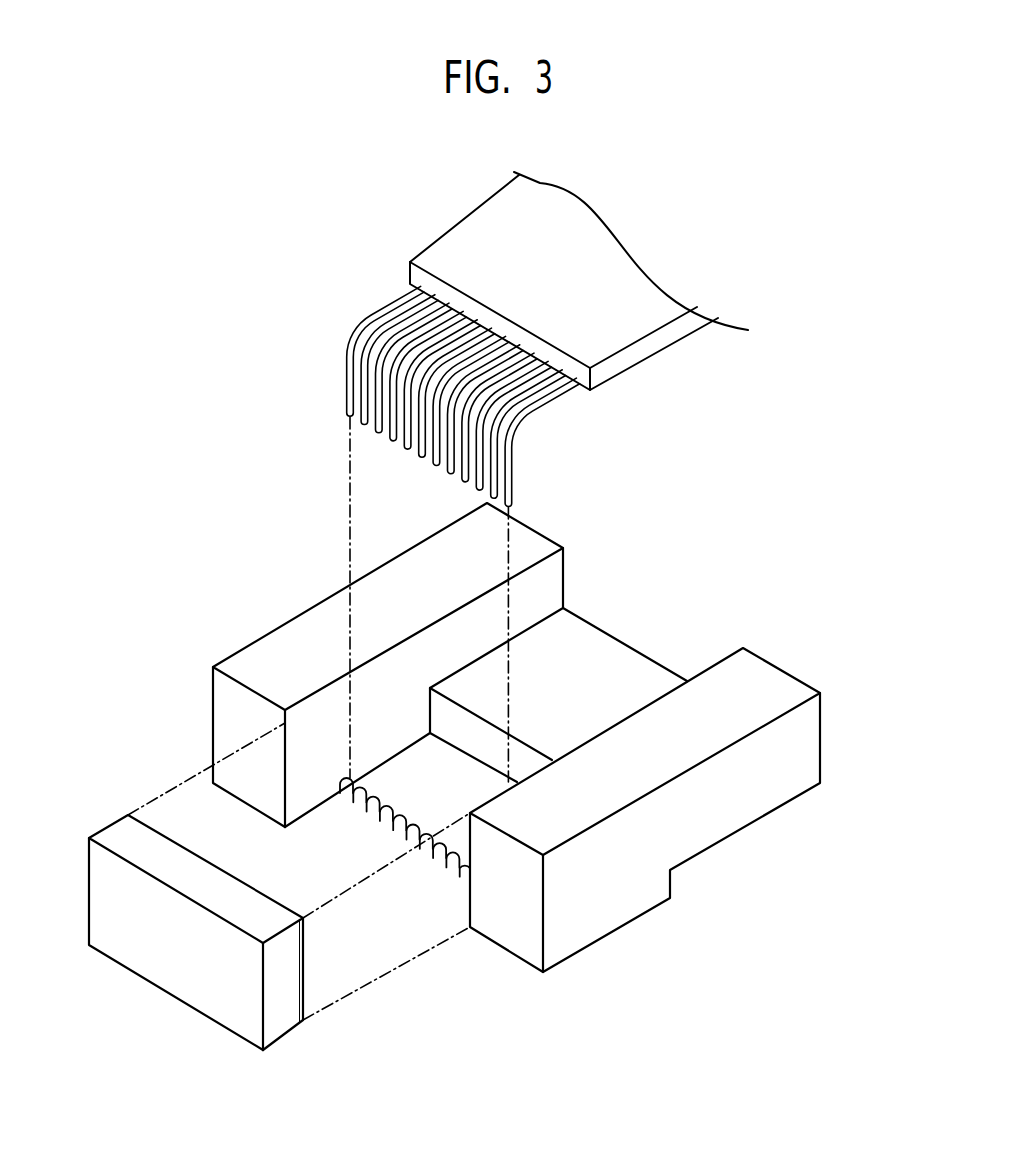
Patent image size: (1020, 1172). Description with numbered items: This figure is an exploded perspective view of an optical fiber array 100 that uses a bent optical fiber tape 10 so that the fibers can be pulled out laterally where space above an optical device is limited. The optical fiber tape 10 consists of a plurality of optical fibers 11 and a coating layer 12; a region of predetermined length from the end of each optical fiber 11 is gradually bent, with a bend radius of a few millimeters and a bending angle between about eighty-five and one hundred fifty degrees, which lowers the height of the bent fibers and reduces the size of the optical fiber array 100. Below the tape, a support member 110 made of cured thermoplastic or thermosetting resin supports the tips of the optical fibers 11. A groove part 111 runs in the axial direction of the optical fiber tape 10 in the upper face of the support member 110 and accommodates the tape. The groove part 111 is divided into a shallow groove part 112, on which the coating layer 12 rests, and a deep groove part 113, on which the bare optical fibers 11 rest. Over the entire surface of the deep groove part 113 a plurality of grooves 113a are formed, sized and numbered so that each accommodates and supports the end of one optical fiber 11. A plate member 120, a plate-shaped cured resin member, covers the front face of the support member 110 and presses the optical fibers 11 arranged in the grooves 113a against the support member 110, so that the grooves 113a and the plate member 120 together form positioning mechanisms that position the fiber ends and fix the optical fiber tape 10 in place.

The optical fiber tape 10 is at (334, 121).
The optical fibers 11 is at (373, 302).
The coating layer 12 is at (440, 253).
The optical fiber array 100 is at (178, 617).
The support member 110 is at (520, 945).
The groove part 111 is at (668, 640).
The shallow groove part 112 is at (580, 643).
The deep groove part 113 is at (440, 803).
The grooves 113a is at (377, 806).
The plate member 120 is at (123, 832).